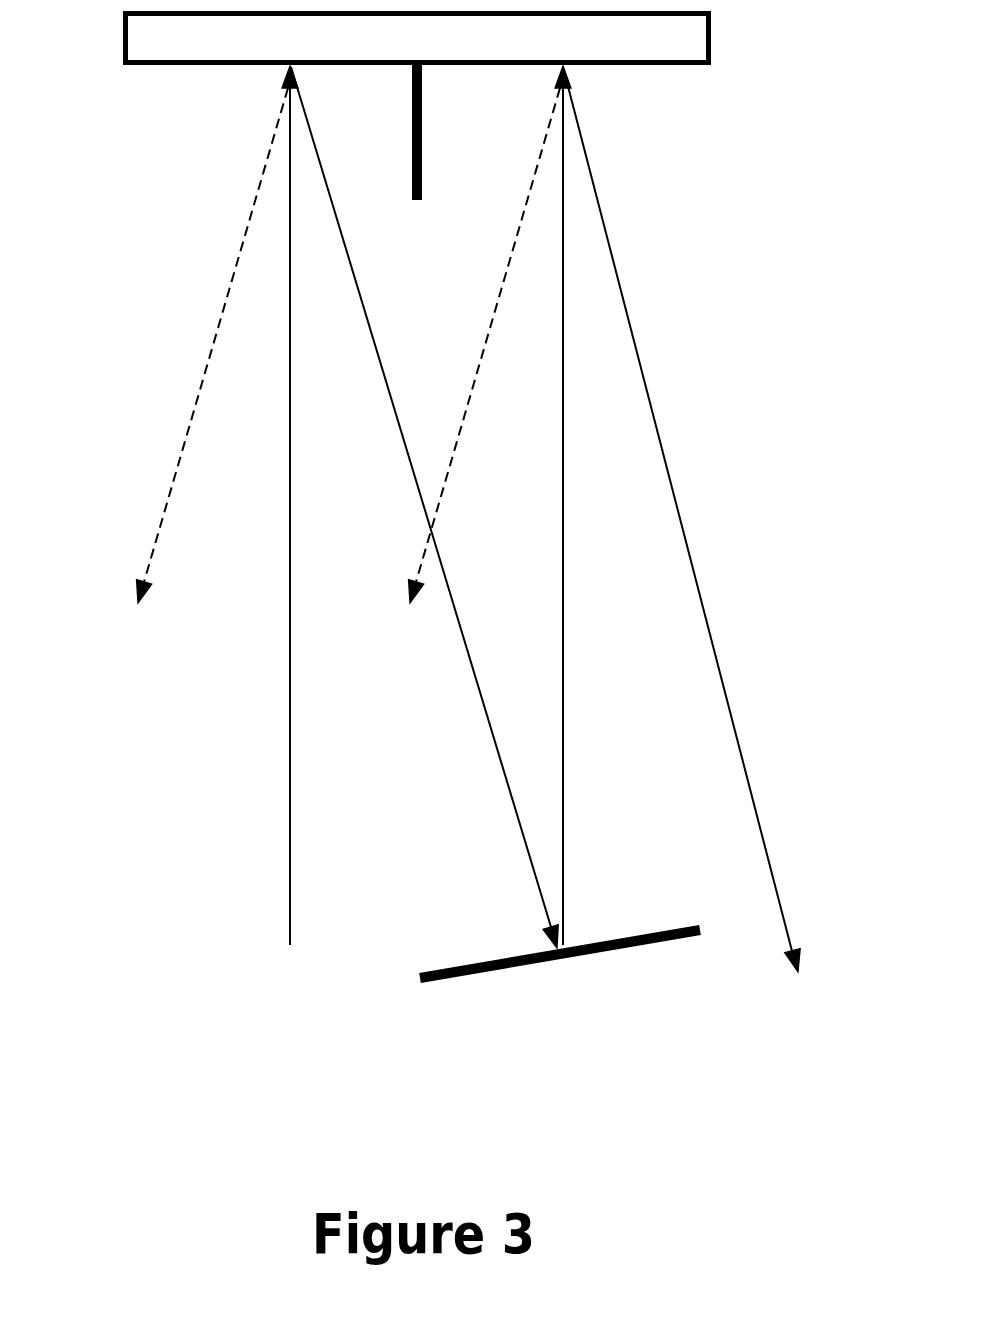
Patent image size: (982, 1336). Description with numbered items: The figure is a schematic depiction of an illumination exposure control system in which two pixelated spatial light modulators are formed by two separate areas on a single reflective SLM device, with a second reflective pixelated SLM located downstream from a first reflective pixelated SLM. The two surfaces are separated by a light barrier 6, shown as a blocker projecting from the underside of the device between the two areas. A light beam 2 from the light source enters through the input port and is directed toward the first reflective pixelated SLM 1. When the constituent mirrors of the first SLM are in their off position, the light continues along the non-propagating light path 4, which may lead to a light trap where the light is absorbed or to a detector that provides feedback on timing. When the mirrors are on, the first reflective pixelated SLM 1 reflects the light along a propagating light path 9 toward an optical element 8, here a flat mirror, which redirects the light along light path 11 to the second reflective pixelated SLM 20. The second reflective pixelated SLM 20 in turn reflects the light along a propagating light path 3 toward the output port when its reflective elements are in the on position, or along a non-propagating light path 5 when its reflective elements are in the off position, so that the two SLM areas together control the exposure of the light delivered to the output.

The first reflective pixelated SLM 1 is at (165, 67).
The second reflective pixelated SLM 20 is at (693, 74).
The light barrier 6 is at (417, 202).
The light beam 2 is at (289, 730).
The light path 11 is at (563, 633).
The non-propagating light path 4 is at (197, 378).
The non-propagating light path 5 is at (465, 413).
The propagating light path 9 is at (487, 703).
The propagating light path 3 is at (710, 630).
The optical element 8 is at (612, 952).